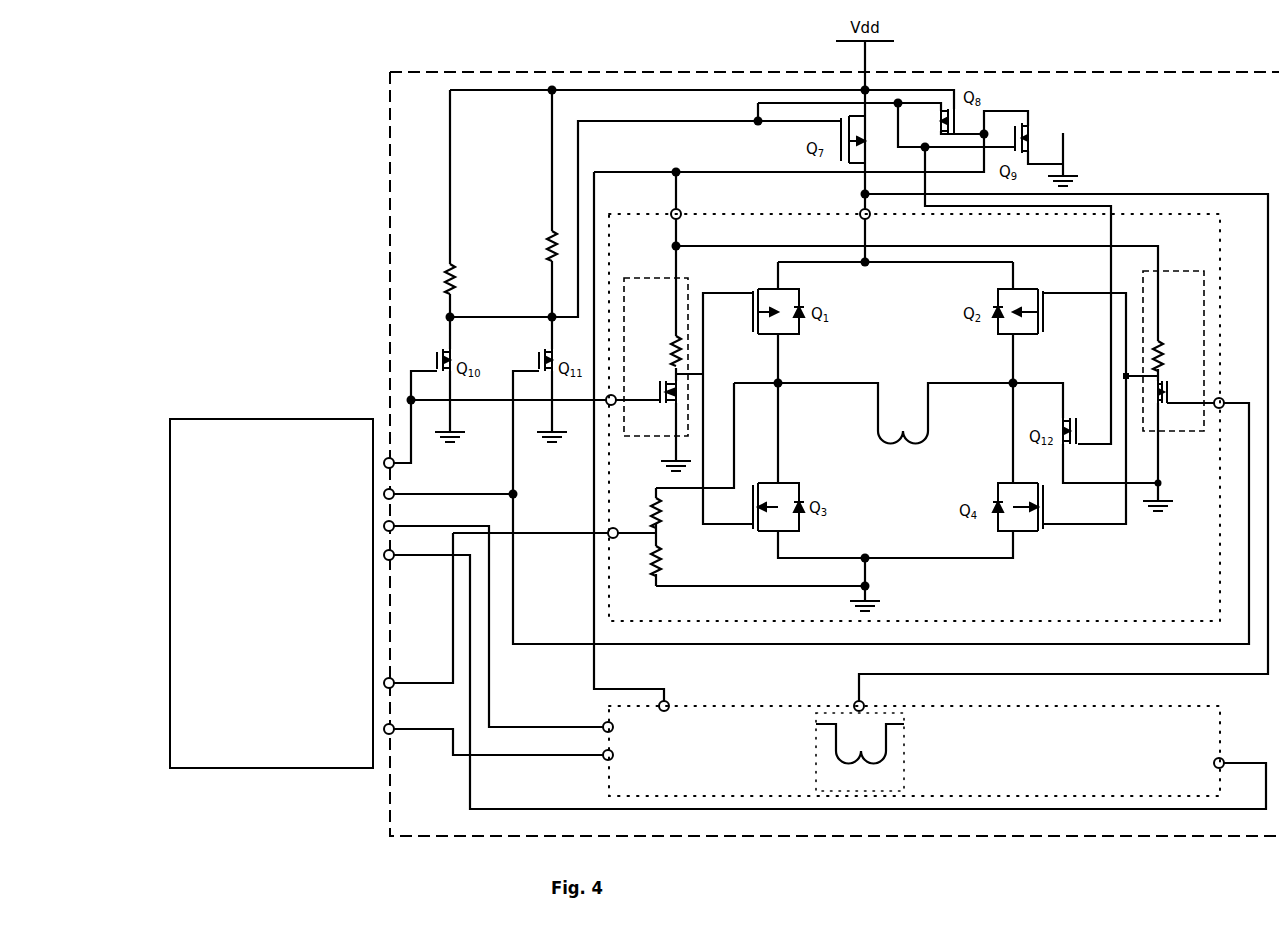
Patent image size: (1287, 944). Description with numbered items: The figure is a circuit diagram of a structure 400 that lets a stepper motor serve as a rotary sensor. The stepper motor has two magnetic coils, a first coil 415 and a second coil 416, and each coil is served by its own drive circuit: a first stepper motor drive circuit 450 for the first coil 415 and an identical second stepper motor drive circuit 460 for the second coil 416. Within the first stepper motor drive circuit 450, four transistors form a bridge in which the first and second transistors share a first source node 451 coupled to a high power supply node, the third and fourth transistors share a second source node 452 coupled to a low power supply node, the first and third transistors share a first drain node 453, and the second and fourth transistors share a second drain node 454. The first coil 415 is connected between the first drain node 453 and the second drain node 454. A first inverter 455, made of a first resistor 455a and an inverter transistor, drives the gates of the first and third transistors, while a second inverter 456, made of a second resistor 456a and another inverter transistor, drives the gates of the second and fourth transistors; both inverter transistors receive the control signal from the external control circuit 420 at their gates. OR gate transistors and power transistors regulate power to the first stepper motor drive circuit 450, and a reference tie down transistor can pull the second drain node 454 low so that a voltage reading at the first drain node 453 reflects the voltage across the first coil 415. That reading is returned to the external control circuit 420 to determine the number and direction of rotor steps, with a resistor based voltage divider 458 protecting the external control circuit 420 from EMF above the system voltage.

The structure 400 is at (1165, 53).
The first coil 415 is at (898, 413).
The second coil 416 is at (808, 755).
The external control circuit 420 is at (272, 398).
The first stepper motor drive circuit 450 is at (1098, 579).
The first source node 451 is at (878, 269).
The second source node 452 is at (865, 543).
The first drain node 453 is at (800, 397).
The second drain node 454 is at (998, 397).
The first inverter 455 is at (635, 268).
The first resistor 455a is at (653, 352).
The second inverter 456 is at (1195, 267).
The second resistor 456a is at (1173, 353).
The resistor based voltage divider 458 is at (680, 550).
The second stepper motor drive circuit 460 is at (1096, 752).